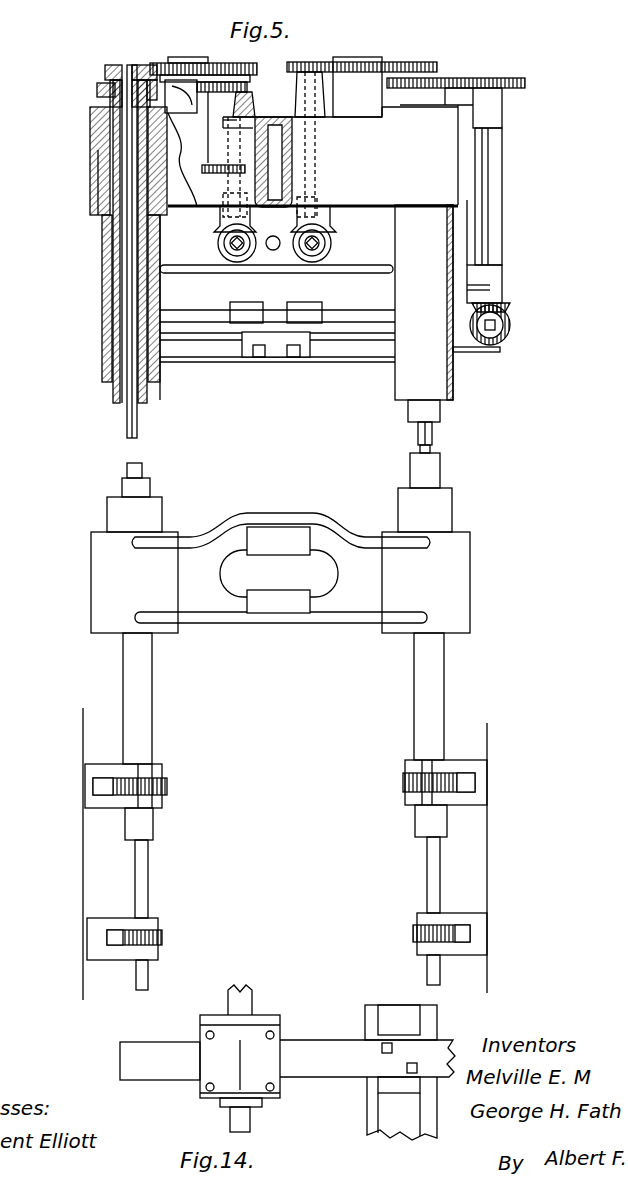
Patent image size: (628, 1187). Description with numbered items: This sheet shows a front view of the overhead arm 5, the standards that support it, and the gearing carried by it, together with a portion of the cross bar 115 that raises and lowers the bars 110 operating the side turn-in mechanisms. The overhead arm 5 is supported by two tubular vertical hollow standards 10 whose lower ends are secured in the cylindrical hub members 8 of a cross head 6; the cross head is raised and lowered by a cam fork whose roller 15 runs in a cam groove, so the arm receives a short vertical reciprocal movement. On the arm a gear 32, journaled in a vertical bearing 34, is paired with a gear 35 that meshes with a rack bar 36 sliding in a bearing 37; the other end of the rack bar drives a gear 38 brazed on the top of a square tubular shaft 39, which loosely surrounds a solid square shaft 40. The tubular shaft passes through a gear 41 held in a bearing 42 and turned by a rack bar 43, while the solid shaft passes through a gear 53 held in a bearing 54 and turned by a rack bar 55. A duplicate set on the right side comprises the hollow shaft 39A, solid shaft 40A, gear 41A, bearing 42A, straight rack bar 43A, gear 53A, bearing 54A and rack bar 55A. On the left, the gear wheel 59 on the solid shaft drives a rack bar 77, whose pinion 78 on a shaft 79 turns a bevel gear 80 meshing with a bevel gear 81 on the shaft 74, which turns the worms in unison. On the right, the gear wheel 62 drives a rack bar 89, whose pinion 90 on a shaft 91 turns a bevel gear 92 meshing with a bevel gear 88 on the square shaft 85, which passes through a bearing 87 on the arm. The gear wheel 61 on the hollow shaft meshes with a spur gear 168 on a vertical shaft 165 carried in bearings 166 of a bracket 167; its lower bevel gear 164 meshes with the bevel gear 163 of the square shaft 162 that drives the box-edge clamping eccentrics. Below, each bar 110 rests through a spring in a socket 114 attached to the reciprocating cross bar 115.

In FIG. 5, the overhead arm 5 is at (320, 155).
In FIG. 5, the cross head 6 is at (290, 620).
In FIG. 5, the cylindrical hub members 8 is at (92, 580).
In FIG. 5, the tubular vertical hollow standards 10 is at (102, 330).
In FIG. 14, the roller 15 is at (240, 985).
In FIG. 5, the gear 32 is at (222, 176).
In FIG. 5, the vertical bearing 34 is at (222, 134).
In FIG. 5, the gear 35 is at (252, 98).
In FIG. 5, the rack bar 36 is at (181, 104).
In FIG. 5, the bearing 37 is at (197, 105).
In FIG. 5, the gear 38 is at (97, 90).
In FIG. 5, the square tubular shaft 39 is at (116, 396).
In FIG. 5, the right hand hollow shaft 39A is at (440, 466).
In FIG. 5, the solid square shaft 40 is at (127, 428).
In FIG. 5, the right hand solid shaft 40A is at (433, 433).
In FIG. 5, the gear 41 is at (189, 780).
In FIG. 5, the gear 41A is at (405, 782).
In FIG. 5, the bearing 42 is at (105, 805).
In FIG. 5, the bracket 42A is at (475, 802).
In FIG. 5, the rack bar 43 is at (95, 785).
In FIG. 5, the straight rack bar 43A is at (475, 782).
In FIG. 5, the gear 53 is at (160, 936).
In FIG. 5, the gear 53A is at (415, 933).
In FIG. 5, the bearing 54 is at (105, 955).
In FIG. 5, the bracket 54A is at (478, 958).
In FIG. 5, the rack bar 55 is at (108, 935).
In FIG. 5, the gear 55A is at (470, 933).
In FIG. 5, the gear wheel 59 is at (105, 68).
In FIG. 5, the gear wheel 61 is at (437, 82).
In FIG. 5, the gear wheel 62 is at (418, 62).
In FIG. 5, the shaft 74 is at (230, 243).
In FIG. 5, the rack bar 77 is at (170, 63).
In FIG. 5, the pinion 78 is at (242, 82).
In FIG. 5, the shaft 79 is at (285, 182).
In FIG. 5, the bevel gear 80 is at (218, 228).
In FIG. 5, the bevel gear 81 is at (225, 268).
In FIG. 5, the square shaft 85 is at (331, 243).
In FIG. 5, the bearing 87 is at (330, 258).
In FIG. 5, the bevel gear 88 is at (312, 262).
In FIG. 5, the rack bar 89 is at (360, 57).
In FIG. 5, the pinion 90 is at (304, 62).
In FIG. 5, the shaft 91 is at (320, 135).
In FIG. 5, the bevel gear 92 is at (332, 222).
In FIG. 14, the bars 110 is at (250, 995).
In FIG. 14, the socket 114 is at (200, 1035).
In FIG. 14, the cross bar 115 is at (343, 1058).
In FIG. 5, the square shaft 162 is at (505, 342).
In FIG. 5, the bevel gear 163 is at (511, 326).
In FIG. 5, the bevel gear 164 is at (508, 304).
In FIG. 5, the vertical shaft 165 is at (490, 207).
In FIG. 5, the bearings 166 is at (500, 108).
In FIG. 5, the bracket 167 is at (468, 156).
In FIG. 5, the spur gear 168 is at (525, 82).